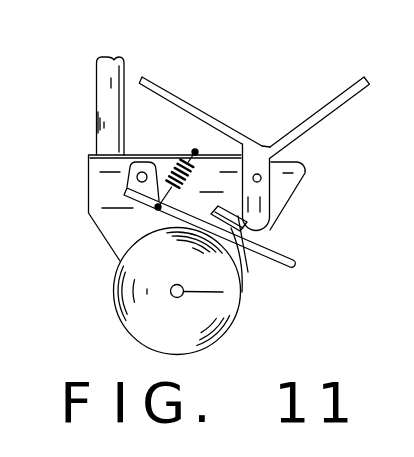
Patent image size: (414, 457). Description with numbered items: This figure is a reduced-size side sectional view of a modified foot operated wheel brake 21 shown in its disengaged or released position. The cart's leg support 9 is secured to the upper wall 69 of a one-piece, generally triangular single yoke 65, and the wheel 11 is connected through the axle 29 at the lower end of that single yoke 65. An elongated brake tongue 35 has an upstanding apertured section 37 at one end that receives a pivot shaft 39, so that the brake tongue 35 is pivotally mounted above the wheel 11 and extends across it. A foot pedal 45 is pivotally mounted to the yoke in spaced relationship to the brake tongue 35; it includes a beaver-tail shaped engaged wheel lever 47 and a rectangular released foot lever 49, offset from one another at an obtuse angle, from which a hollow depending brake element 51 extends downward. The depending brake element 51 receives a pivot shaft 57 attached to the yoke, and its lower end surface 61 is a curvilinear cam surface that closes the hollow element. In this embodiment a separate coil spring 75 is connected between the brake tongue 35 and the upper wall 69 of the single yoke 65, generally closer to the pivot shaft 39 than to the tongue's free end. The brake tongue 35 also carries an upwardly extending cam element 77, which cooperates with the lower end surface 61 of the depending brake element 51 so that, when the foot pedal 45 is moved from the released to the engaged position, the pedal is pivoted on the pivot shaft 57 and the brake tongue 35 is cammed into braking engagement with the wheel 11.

The leg support 9 is at (106, 98).
The wheel 11 is at (192, 352).
The foot operated wheel brake 21 is at (257, 121).
The axle 29 is at (243, 307).
The brake tongue 35 is at (291, 257).
The upstanding apertured section 37 is at (153, 180).
The pivot shaft 39 is at (147, 171).
The foot pedal 45 is at (272, 187).
The engaged wheel lever 47 is at (332, 110).
The released foot lever 49 is at (190, 103).
The depending brake element 51 is at (270, 200).
The pivot shaft 57 is at (260, 175).
The lower end surface 61 is at (270, 240).
The single yoke 65 is at (100, 237).
The upper wall 69 is at (138, 152).
The coil spring 75 is at (196, 184).
The cam element 77 is at (243, 267).